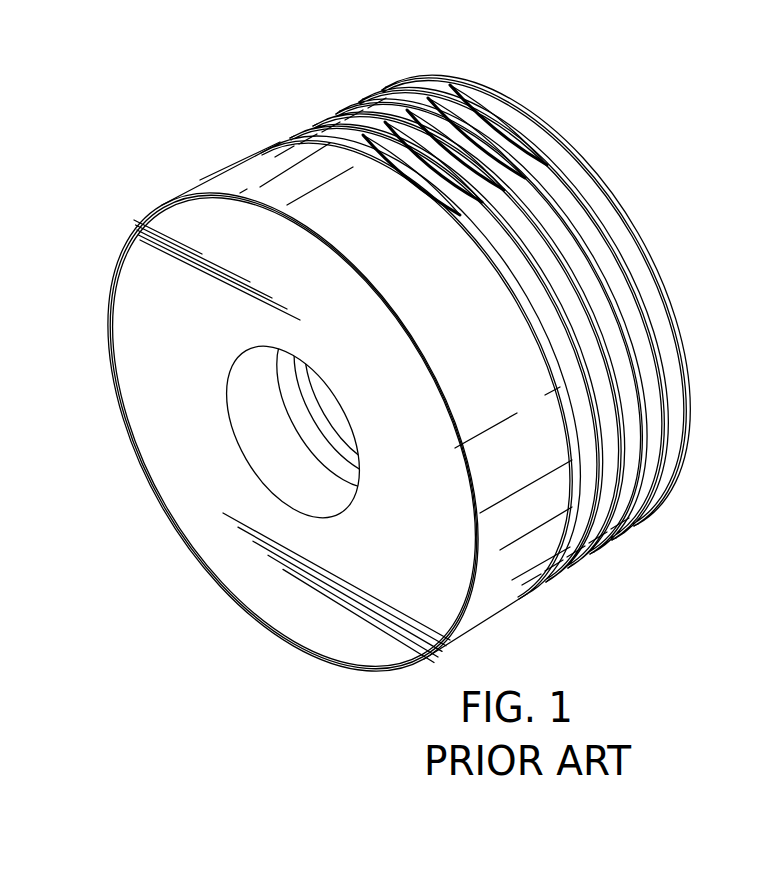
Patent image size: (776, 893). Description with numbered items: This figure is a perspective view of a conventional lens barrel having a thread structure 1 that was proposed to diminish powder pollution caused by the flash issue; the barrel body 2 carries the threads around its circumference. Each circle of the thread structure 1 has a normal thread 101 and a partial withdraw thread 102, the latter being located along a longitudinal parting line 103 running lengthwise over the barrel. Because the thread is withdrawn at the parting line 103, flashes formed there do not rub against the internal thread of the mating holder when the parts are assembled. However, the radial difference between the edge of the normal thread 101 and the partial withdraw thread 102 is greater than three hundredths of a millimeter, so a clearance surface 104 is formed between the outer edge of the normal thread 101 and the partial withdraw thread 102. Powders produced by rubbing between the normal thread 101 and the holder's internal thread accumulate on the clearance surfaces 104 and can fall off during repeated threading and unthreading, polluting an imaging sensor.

The thread structure 1 is at (659, 273).
The front flange disc 2 is at (206, 172).
The normal thread 101 is at (612, 215).
The partial withdraw thread 102 is at (527, 132).
The longitudinal parting line 103 is at (523, 113).
The clearance surface 104 is at (449, 84).